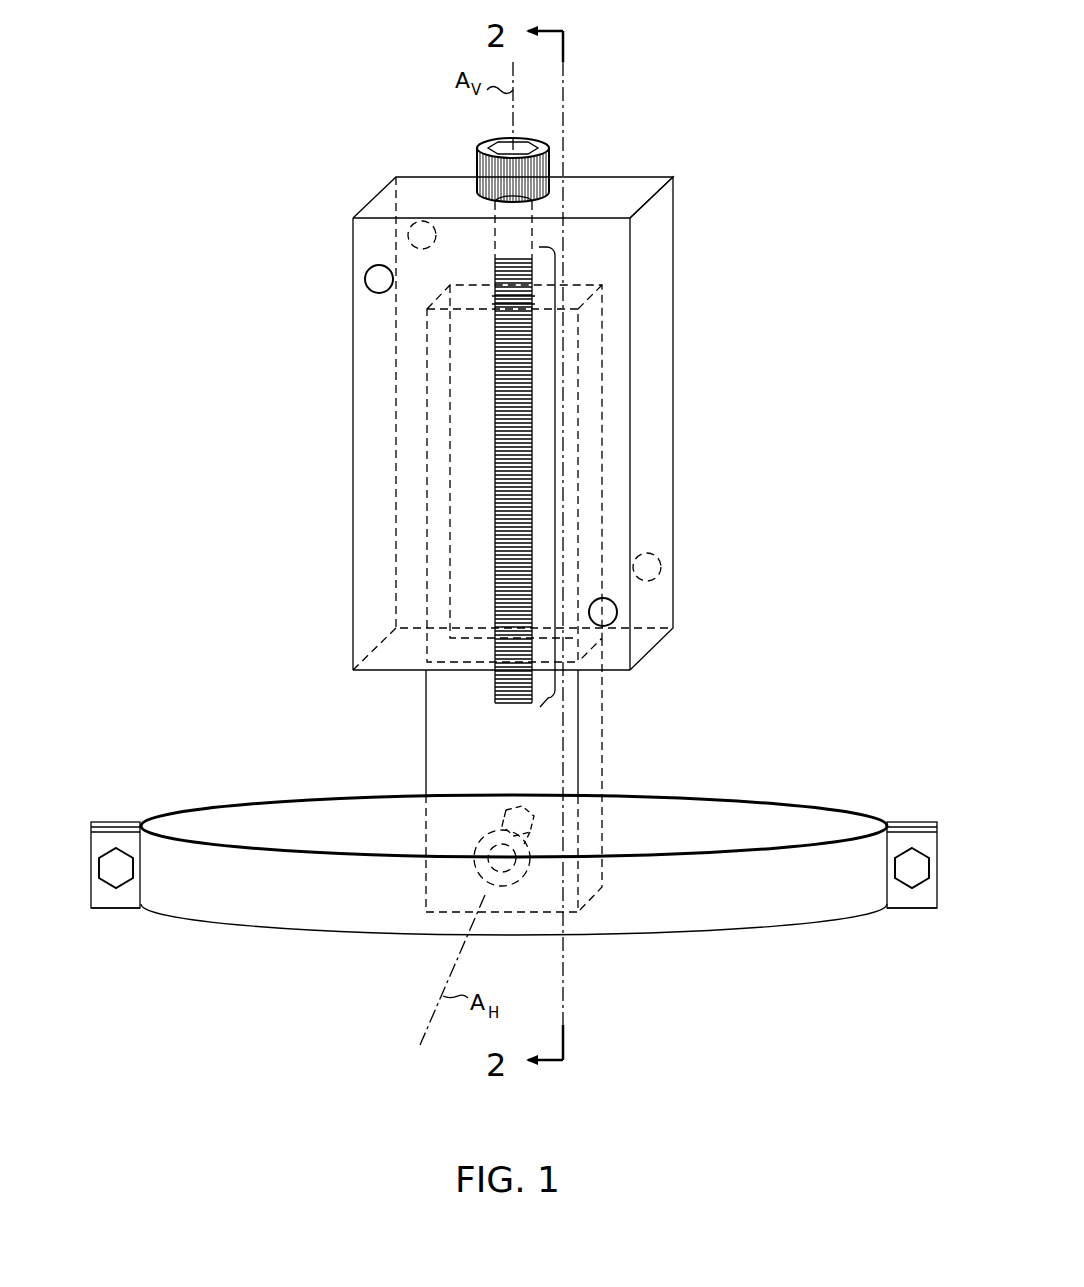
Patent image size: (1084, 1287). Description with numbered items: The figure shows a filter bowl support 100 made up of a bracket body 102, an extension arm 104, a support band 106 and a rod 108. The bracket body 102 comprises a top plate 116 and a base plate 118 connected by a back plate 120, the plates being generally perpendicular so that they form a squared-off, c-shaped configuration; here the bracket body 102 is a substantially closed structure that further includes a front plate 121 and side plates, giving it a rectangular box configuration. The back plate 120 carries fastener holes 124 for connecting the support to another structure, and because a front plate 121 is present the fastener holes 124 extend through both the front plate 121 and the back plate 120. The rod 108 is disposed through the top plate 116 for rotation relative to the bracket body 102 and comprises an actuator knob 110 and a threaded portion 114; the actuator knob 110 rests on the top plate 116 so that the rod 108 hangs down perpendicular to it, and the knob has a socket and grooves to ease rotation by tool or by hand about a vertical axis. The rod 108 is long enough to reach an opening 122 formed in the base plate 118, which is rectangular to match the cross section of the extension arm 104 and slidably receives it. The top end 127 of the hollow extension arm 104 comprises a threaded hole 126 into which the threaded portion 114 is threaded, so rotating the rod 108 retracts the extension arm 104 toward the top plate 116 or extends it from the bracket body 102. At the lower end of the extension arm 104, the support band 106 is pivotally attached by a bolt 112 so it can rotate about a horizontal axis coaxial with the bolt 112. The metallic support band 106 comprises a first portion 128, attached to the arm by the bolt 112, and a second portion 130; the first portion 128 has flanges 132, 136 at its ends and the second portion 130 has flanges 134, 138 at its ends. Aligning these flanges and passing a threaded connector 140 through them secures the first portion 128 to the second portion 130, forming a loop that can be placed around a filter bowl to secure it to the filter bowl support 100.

The filter bowl support 100 is at (684, 108).
The bracket body 102 is at (708, 388).
The extension arm 104 is at (426, 730).
The support band 106 is at (714, 772).
The rod 108 is at (476, 334).
The actuator knob 110 is at (487, 142).
The bolt 112 is at (482, 840).
The threaded portion 114 is at (556, 480).
The top plate 116 is at (621, 185).
The base plate 118 is at (652, 656).
The back plate 120 is at (674, 283).
The front plate 121 is at (352, 446).
The opening 122 is at (460, 664).
The fastener holes 124 is at (364, 280).
The threaded hole 126 is at (494, 298).
The top end 127 is at (580, 290).
The first portion 128 is at (796, 802).
The second portion 130 is at (695, 937).
The flange 132 is at (910, 820).
The flange 134 is at (910, 912).
The flange 136 is at (112, 820).
The flange 138 is at (112, 912).
The threaded connector 140 is at (122, 868).